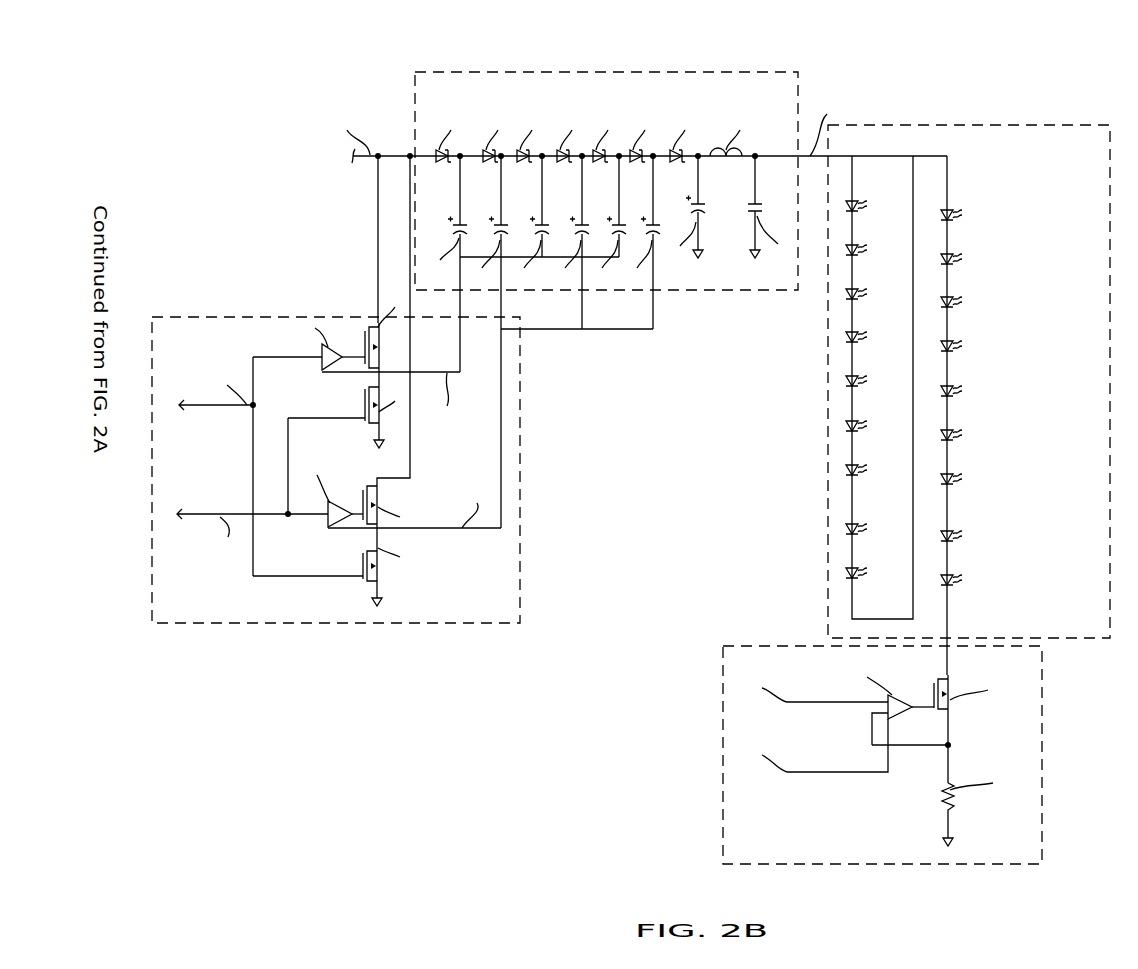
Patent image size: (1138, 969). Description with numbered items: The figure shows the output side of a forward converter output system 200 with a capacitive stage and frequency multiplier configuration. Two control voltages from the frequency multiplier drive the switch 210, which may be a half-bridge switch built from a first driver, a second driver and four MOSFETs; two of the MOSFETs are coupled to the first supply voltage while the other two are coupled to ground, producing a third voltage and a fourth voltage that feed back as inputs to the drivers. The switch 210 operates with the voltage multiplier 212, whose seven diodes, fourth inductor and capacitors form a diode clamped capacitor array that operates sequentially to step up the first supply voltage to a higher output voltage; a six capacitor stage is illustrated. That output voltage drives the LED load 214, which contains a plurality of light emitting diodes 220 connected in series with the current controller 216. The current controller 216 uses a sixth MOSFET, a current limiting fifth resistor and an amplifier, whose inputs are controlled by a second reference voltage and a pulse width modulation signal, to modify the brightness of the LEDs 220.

The forward converter output system 200 is at (185, 106).
The switch 210 is at (237, 317).
The voltage multiplier 212 is at (698, 72).
The light emitting diode (LED) load 214 is at (1058, 128).
The current controller 216 is at (1045, 820).
The light emitting diodes (LEDs) 220 is at (978, 606).